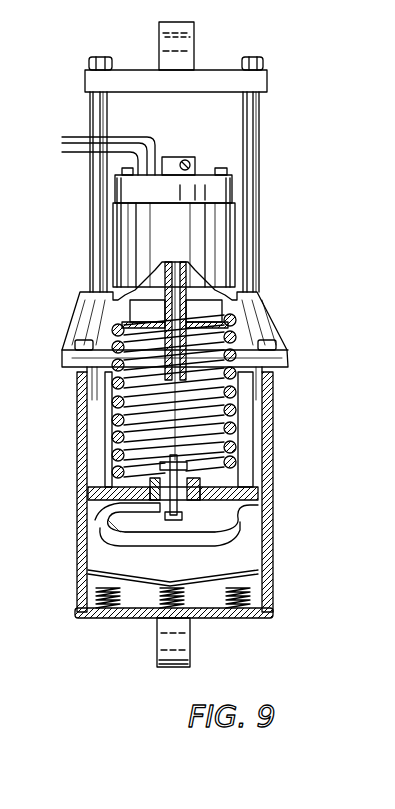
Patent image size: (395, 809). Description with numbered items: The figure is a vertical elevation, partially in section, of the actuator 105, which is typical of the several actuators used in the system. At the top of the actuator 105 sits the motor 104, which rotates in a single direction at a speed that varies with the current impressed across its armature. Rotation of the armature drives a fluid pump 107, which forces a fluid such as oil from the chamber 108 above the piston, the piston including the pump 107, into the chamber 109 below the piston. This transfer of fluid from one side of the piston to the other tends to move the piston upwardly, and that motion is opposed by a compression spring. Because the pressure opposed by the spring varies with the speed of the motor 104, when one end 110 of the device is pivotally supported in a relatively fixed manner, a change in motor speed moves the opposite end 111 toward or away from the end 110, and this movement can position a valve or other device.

The motor 104 is at (233, 235).
The actuator 105 is at (328, 342).
The fluid pump 107 is at (250, 517).
The chamber 108 is at (113, 428).
The chamber 109 is at (173, 572).
The end 110 is at (191, 650).
The end 111 is at (194, 24).